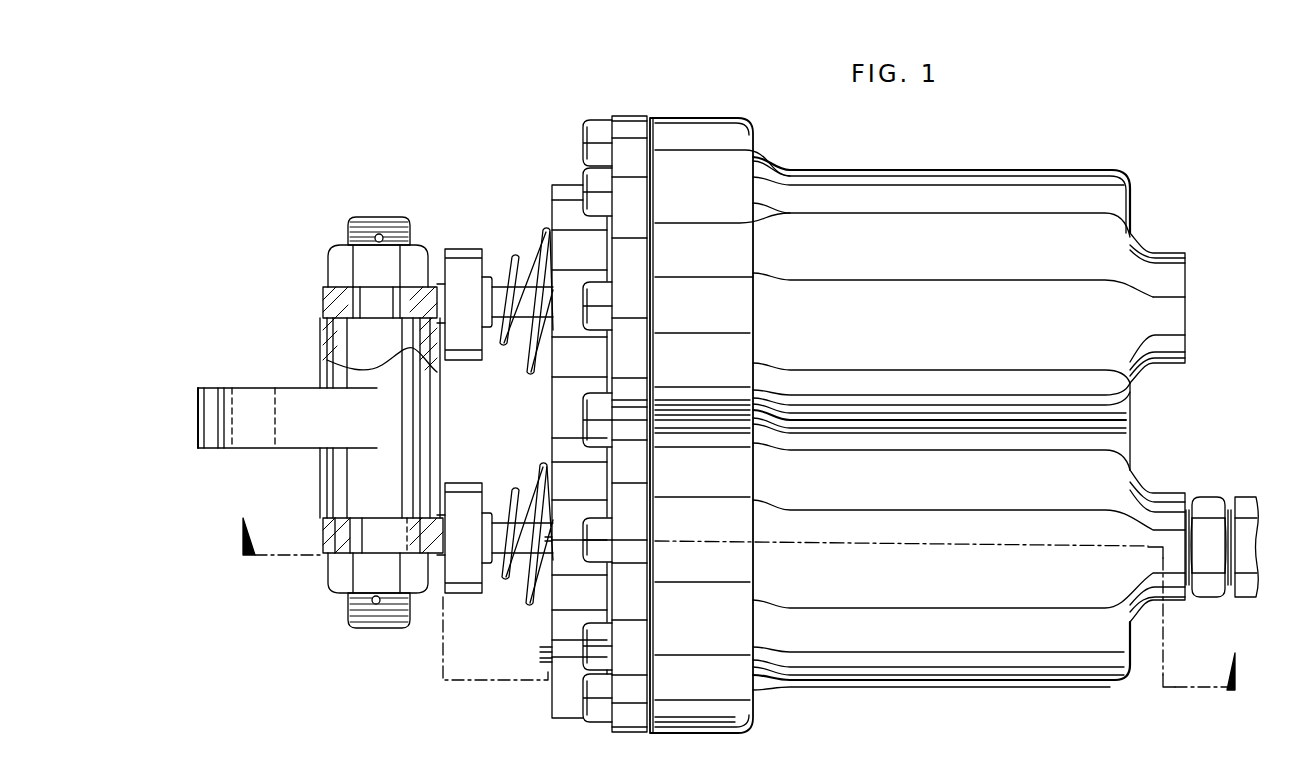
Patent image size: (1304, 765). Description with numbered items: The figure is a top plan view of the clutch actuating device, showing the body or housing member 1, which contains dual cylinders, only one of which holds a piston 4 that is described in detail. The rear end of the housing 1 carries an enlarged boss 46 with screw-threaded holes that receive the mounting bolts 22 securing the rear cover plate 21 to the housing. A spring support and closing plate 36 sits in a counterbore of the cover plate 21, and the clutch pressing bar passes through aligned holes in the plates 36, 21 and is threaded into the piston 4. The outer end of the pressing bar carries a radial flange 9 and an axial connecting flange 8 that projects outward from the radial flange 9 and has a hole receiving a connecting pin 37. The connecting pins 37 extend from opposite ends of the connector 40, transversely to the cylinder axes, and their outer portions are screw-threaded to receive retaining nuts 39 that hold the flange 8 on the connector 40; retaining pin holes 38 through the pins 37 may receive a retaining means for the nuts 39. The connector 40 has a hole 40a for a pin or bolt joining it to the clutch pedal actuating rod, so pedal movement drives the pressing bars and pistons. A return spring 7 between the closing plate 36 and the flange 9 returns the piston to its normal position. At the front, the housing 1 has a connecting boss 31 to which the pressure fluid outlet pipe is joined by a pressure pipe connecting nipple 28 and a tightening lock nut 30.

The housing member 1 is at (1100, 170).
The piston 4 is at (735, 587).
The return spring 7 is at (516, 252).
The axial connecting flange 8 is at (335, 543).
The radial flange 9 is at (462, 249).
The cover plate 21 is at (630, 116).
The mounting bolts 22 is at (585, 124).
The pressure pipe connecting nipple 28 is at (1205, 498).
The lock nut 30 is at (1246, 505).
The connecting boss 31 is at (1175, 252).
The spring support and closing plate 36 is at (556, 198).
The connecting pin 37 is at (360, 216).
The retaining pin hole 38 is at (382, 235).
The retaining nut 39 is at (335, 264).
The connector 40 is at (298, 392).
The hole 40a is at (246, 390).
The enlarged boss 46 is at (690, 117).